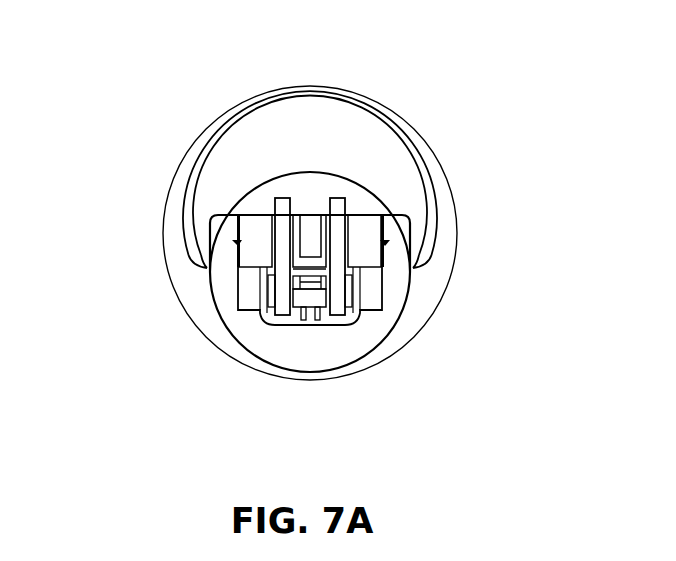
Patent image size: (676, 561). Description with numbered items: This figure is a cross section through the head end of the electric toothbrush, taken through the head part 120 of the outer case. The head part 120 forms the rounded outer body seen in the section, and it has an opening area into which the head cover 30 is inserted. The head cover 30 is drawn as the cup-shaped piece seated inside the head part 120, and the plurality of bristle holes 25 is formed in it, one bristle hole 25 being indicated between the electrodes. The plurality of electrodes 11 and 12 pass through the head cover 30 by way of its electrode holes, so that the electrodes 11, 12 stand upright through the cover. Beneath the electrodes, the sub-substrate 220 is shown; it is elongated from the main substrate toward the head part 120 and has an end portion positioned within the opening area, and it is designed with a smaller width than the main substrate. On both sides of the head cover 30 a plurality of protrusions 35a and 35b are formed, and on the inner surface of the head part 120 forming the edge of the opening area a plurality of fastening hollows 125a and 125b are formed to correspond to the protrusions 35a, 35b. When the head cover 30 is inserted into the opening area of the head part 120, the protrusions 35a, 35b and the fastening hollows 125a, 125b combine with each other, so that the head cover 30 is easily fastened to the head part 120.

The electrode 11 is at (283, 207).
The electrode 12 is at (340, 205).
The bristle hole 25 is at (313, 224).
The head cover 30 is at (252, 228).
The protrusion 35a is at (238, 247).
The protrusion 35b is at (392, 246).
The head part 120 is at (243, 327).
The fastening hollow 125a is at (237, 242).
The fastening hollow 125b is at (386, 242).
The sub-substrate 220 is at (320, 304).